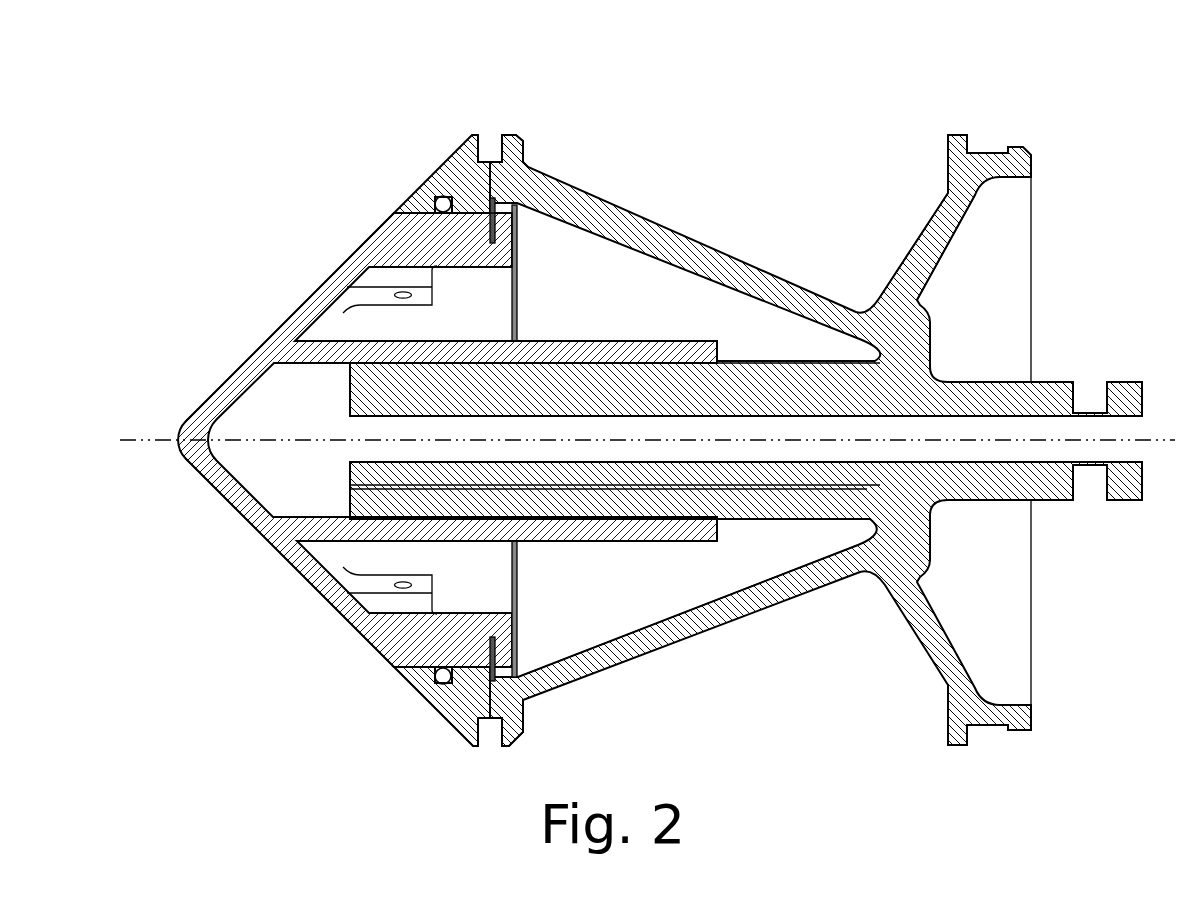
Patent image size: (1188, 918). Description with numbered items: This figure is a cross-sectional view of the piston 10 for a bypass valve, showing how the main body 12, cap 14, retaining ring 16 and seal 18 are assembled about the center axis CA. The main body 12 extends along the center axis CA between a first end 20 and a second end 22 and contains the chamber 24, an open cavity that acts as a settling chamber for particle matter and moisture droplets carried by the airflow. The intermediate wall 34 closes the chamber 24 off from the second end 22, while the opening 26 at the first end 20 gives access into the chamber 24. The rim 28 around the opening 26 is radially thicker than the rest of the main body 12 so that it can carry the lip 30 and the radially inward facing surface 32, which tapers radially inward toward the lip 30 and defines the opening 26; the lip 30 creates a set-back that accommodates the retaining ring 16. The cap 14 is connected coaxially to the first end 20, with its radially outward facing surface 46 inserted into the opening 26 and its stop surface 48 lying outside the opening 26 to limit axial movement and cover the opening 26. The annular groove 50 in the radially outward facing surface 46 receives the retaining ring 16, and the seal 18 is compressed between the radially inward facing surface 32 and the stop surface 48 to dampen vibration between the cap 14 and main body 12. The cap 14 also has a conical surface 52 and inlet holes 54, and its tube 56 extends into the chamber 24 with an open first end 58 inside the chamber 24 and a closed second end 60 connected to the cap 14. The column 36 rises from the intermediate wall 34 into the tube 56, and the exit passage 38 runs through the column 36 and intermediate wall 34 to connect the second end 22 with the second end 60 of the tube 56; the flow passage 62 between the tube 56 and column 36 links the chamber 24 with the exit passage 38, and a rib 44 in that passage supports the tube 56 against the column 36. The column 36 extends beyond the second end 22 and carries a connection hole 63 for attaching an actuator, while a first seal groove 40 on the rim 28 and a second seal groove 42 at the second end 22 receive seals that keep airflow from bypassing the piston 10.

The piston 10 is at (236, 132).
The main body 12 is at (622, 203).
The cap 14 is at (272, 312).
The retaining ring 16 is at (516, 206).
The seal 18 is at (433, 677).
The first end 20 is at (436, 178).
The second end 22 is at (1035, 163).
The chamber 24 is at (622, 596).
The opening 26 is at (460, 674).
The rim 28 is at (497, 700).
The lip 30 is at (491, 200).
The radially inward facing surface 32 is at (457, 205).
The intermediate wall 34 is at (907, 347).
The column 36 is at (772, 478).
The exit passage 38 is at (728, 428).
The first seal groove 40 is at (493, 140).
The second seal groove 42 is at (994, 152).
The ribs 44 is at (612, 383).
The radially outward facing surface 46 is at (428, 233).
The stop surface 48 is at (436, 198).
The groove 50 is at (500, 248).
The conical surface 52 is at (338, 274).
The inlet holes 54 is at (404, 300).
The tube 56 is at (537, 532).
The first end 58 is at (718, 530).
The second end 60 is at (297, 535).
The flow passage 62 is at (592, 515).
The connection hole 63 is at (1087, 403).
The center axis CA is at (248, 440).